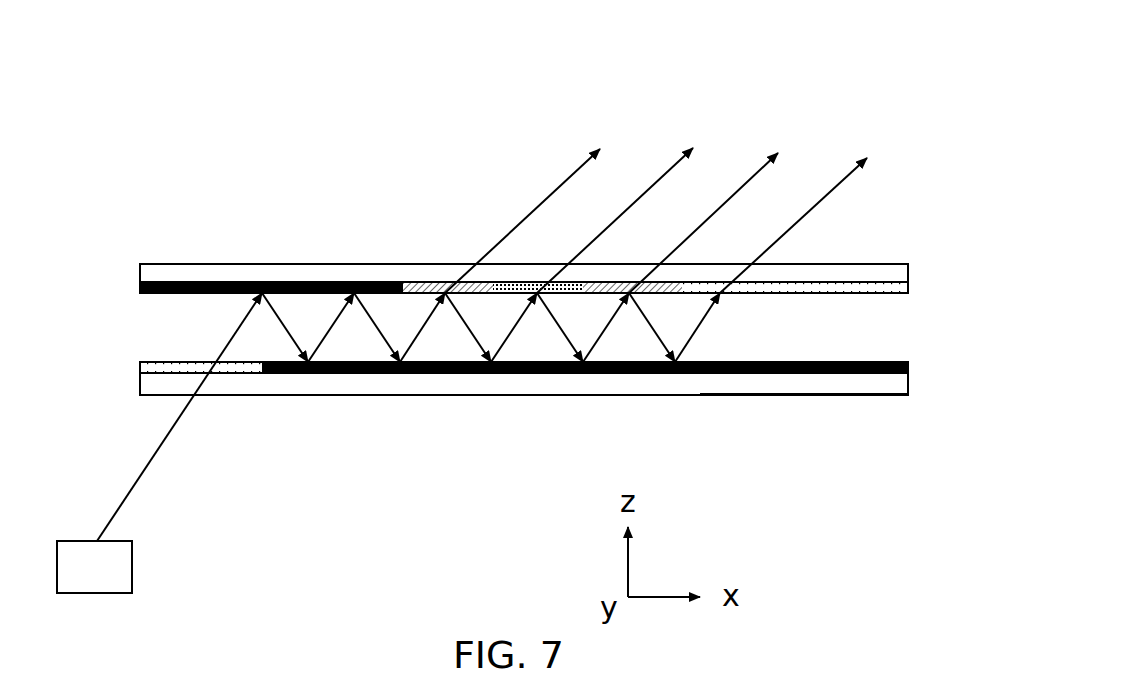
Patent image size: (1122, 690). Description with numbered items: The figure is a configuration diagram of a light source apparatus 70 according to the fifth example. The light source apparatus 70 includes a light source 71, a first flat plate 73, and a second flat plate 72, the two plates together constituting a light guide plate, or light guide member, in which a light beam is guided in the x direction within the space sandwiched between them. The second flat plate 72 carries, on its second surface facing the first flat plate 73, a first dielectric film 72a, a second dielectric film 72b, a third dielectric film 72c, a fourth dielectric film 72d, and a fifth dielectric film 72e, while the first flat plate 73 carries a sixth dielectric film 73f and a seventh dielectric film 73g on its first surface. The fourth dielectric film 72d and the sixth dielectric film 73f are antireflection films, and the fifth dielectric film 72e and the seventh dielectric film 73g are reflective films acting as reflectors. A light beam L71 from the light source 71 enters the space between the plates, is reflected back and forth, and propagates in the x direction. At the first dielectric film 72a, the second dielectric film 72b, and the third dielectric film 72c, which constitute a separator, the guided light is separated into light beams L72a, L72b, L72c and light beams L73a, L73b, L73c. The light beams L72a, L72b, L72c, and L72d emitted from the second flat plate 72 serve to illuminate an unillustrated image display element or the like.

The light source apparatus 70 is at (872, 25).
The light source 71 is at (132, 560).
The second flat plate 72 is at (140, 279).
The first dielectric film 72a is at (452, 283).
The second dielectric film 72b is at (527, 283).
The third dielectric film 72c is at (612, 283).
The fourth dielectric film 72d is at (815, 283).
The fifth dielectric film 72e is at (197, 283).
The first flat plate 73 is at (140, 378).
The sixth dielectric film 73f is at (245, 374).
The seventh dielectric film 73g is at (862, 374).
The light beam L71 is at (168, 438).
The light beam L72a is at (546, 202).
The light beam L72b is at (641, 202).
The light beam L72c is at (735, 202).
The light beam L72d is at (830, 202).
The light beam L73a is at (480, 347).
The light beam L73b is at (571, 347).
The light beam L73c is at (663, 347).